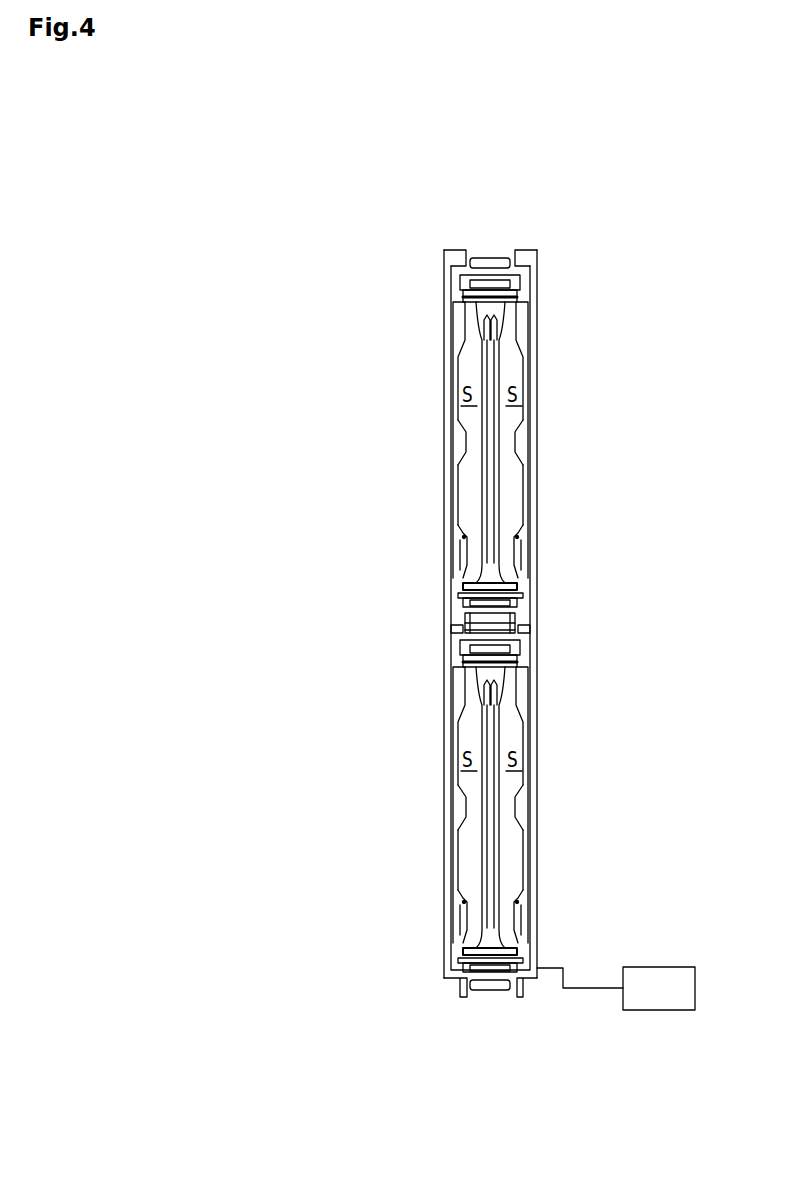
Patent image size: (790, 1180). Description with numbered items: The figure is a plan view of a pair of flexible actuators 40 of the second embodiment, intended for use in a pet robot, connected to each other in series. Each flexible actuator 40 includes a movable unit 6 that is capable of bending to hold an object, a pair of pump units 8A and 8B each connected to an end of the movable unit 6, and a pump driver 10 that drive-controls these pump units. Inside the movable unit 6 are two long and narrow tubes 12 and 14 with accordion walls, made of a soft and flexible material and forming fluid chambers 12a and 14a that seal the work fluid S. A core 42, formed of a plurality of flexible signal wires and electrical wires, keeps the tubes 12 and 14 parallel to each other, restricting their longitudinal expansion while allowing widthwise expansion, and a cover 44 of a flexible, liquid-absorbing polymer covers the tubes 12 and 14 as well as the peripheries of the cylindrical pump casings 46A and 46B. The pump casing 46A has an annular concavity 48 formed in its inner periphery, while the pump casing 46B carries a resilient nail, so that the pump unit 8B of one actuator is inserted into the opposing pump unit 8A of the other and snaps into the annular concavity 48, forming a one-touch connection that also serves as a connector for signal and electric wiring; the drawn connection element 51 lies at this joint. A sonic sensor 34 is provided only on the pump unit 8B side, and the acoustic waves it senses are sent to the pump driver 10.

The movable unit 6 is at (546, 623).
The flexible actuator 40 is at (386, 614).
The cover 44 is at (535, 618).
The annular concavity 48 is at (538, 423).
The pump unit 8A is at (535, 470).
The pump casing 46A is at (436, 471).
The tube 12 is at (426, 622).
The fluid chamber 12a is at (422, 625).
The tube 14 is at (554, 622).
The fluid chamber 14a is at (557, 625).
The core 42 is at (536, 625).
The sonic sensor 34 is at (489, 733).
The pump casing 46B is at (440, 766).
The pump unit 8B is at (536, 773).
The connector tab 51 is at (458, 831).
The pump driver 10 is at (616, 988).